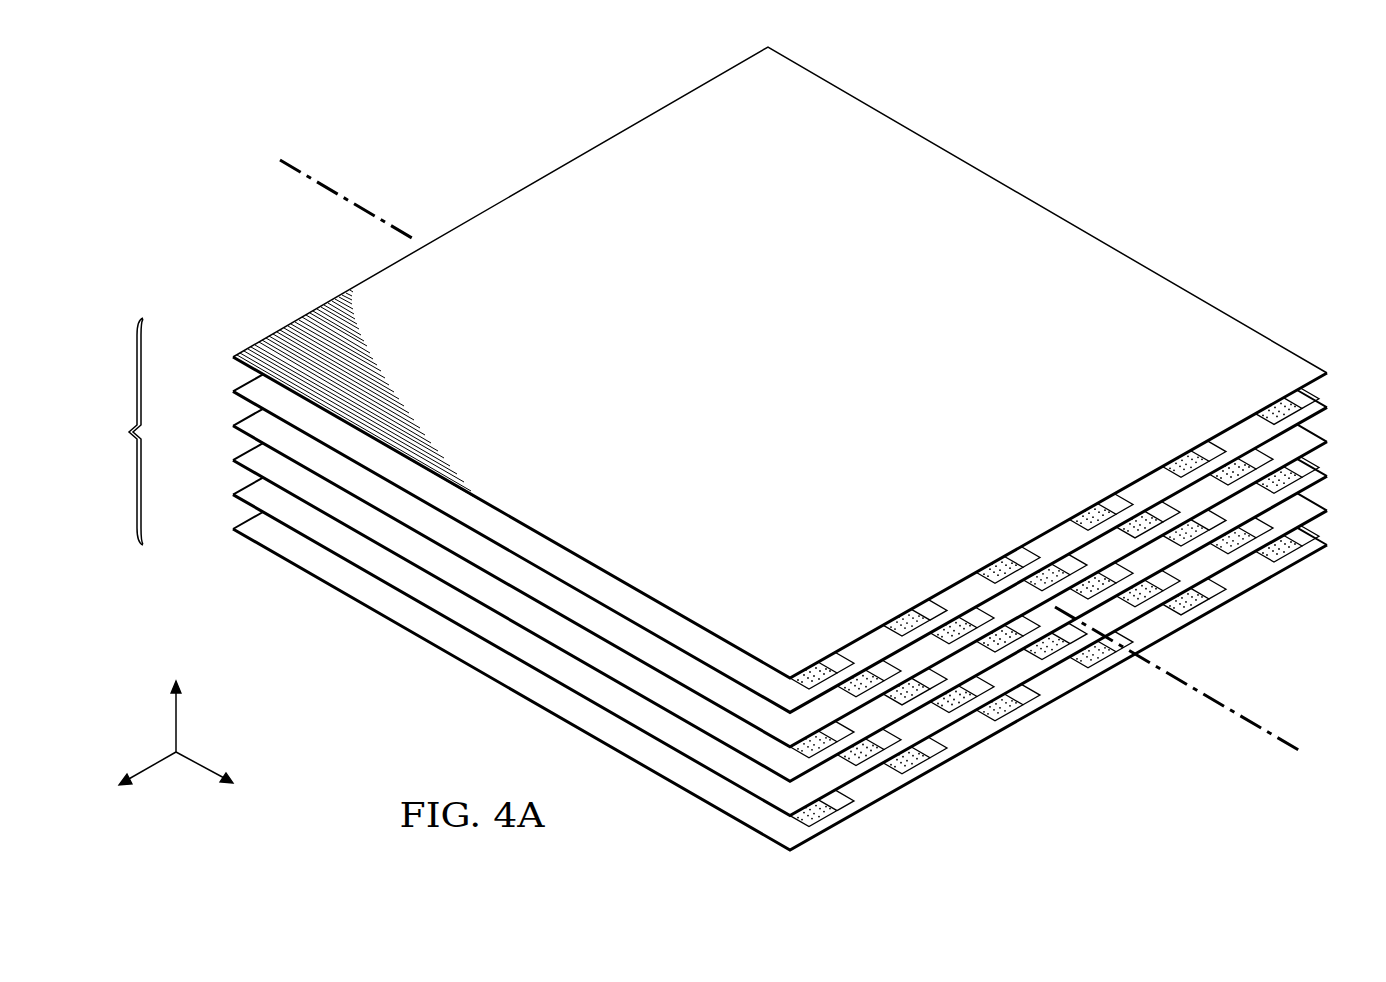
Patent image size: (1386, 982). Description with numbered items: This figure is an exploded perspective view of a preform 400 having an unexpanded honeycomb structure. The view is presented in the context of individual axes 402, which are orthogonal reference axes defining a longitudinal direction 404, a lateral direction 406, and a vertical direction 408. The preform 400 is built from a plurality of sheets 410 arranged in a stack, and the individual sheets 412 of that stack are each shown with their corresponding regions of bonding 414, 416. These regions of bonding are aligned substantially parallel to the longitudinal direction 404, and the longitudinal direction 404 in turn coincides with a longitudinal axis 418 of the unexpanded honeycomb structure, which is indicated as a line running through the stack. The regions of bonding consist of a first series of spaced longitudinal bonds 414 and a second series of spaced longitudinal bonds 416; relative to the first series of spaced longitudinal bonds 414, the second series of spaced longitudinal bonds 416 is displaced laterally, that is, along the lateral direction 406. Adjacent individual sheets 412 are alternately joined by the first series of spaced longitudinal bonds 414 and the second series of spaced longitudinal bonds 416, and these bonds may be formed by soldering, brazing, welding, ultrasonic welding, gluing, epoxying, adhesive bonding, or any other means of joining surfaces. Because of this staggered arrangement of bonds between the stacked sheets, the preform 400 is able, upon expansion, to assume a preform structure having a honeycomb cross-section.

The preform 400 is at (422, 104).
The individual axes 402 is at (192, 730).
The longitudinal direction 404 is at (198, 763).
The lateral direction 406 is at (155, 767).
The vertical direction 408 is at (175, 713).
The plurality of sheets 410 is at (111, 431).
The individual sheets 412 is at (236, 356).
The first series of spaced longitudinal bonds 414 is at (812, 673).
The second series of spaced longitudinal bonds 416 is at (830, 663).
The longitudinal axis 418 is at (347, 196).